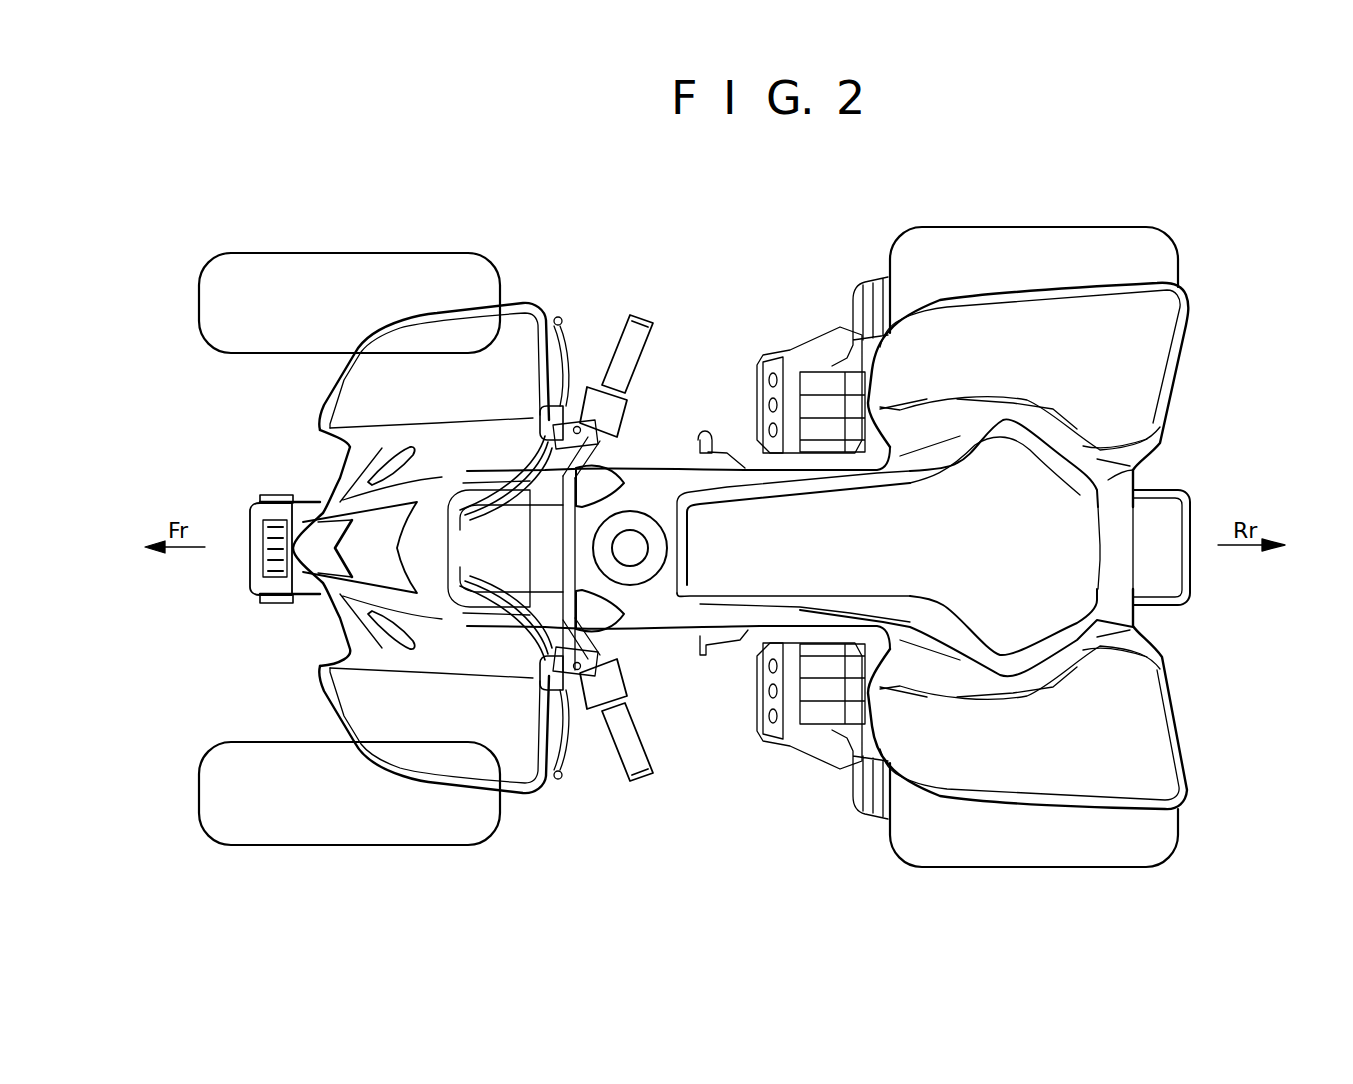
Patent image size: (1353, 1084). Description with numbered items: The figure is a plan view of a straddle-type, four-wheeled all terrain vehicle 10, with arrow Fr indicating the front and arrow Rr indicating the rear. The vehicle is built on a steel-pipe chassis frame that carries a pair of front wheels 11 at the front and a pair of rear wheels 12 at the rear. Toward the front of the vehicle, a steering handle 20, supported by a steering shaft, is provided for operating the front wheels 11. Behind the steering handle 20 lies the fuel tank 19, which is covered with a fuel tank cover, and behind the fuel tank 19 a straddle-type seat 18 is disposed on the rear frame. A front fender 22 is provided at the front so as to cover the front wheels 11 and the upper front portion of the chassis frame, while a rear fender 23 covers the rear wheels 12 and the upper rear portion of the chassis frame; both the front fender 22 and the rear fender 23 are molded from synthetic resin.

The straddle-type, four-wheeled vehicle 10 is at (718, 290).
The front wheels 11 is at (341, 252).
The rear wheels 12 is at (1052, 227).
The straddle-type seat 18 is at (763, 570).
The fuel tank 19 is at (632, 546).
The steering handle 20 is at (615, 338).
The front fender 22 is at (520, 762).
The rear fender 23 is at (1160, 736).